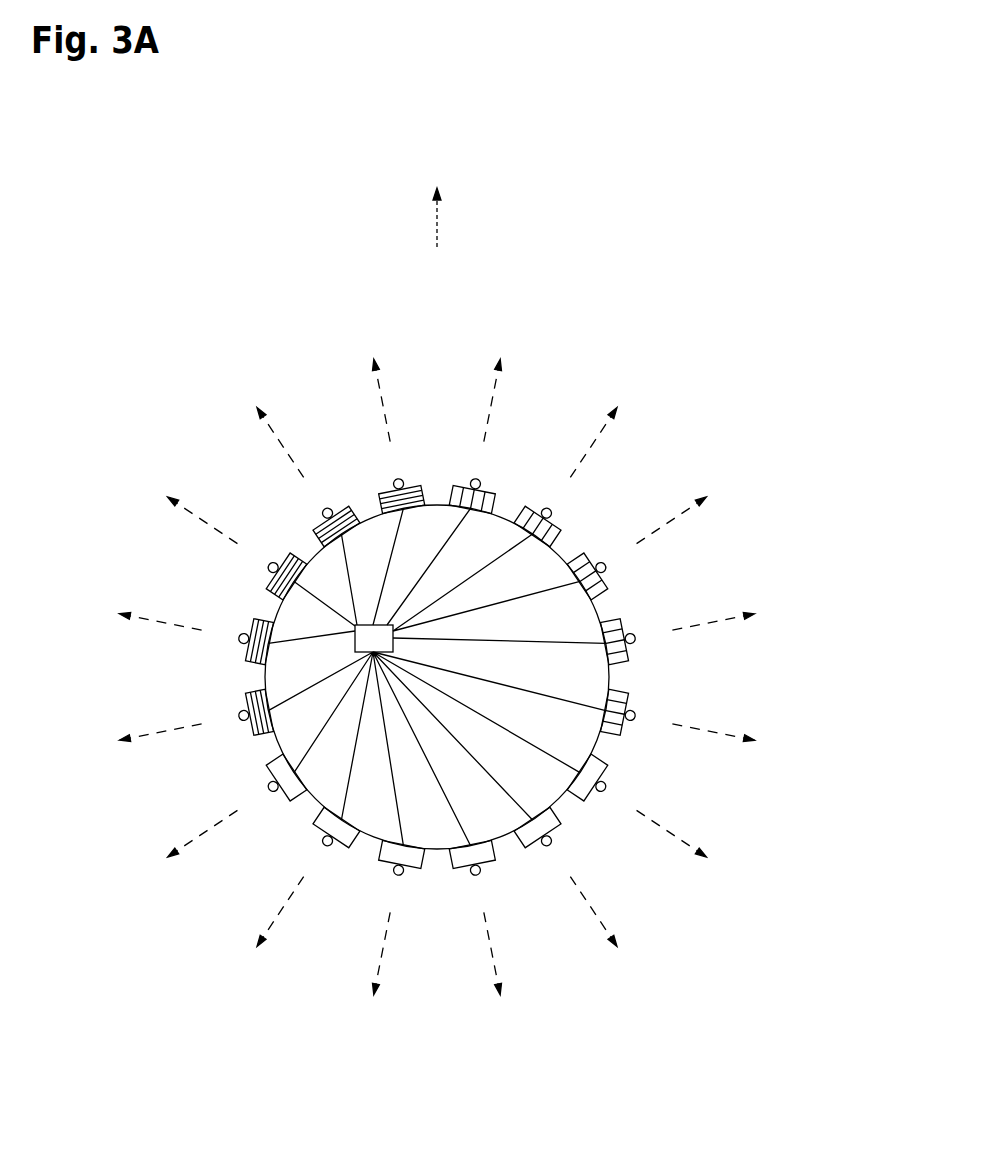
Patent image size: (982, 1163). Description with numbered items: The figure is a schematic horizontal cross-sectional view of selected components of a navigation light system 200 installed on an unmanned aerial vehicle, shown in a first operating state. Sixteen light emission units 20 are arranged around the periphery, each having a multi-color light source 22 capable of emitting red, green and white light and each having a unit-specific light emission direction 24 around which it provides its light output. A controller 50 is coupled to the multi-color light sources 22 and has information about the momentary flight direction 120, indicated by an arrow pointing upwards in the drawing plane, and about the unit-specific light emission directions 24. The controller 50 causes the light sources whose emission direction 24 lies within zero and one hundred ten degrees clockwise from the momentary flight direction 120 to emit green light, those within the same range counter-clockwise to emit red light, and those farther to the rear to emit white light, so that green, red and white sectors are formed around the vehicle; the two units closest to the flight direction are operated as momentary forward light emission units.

The light emission unit 20 is at (766, 612).
The multi-color light source 22 is at (637, 637).
The unit-specific light emission direction 24 is at (181, 782).
The controller 50 is at (367, 628).
The momentary flight direction 120 is at (441, 219).
The navigation light system 200 is at (205, 262).